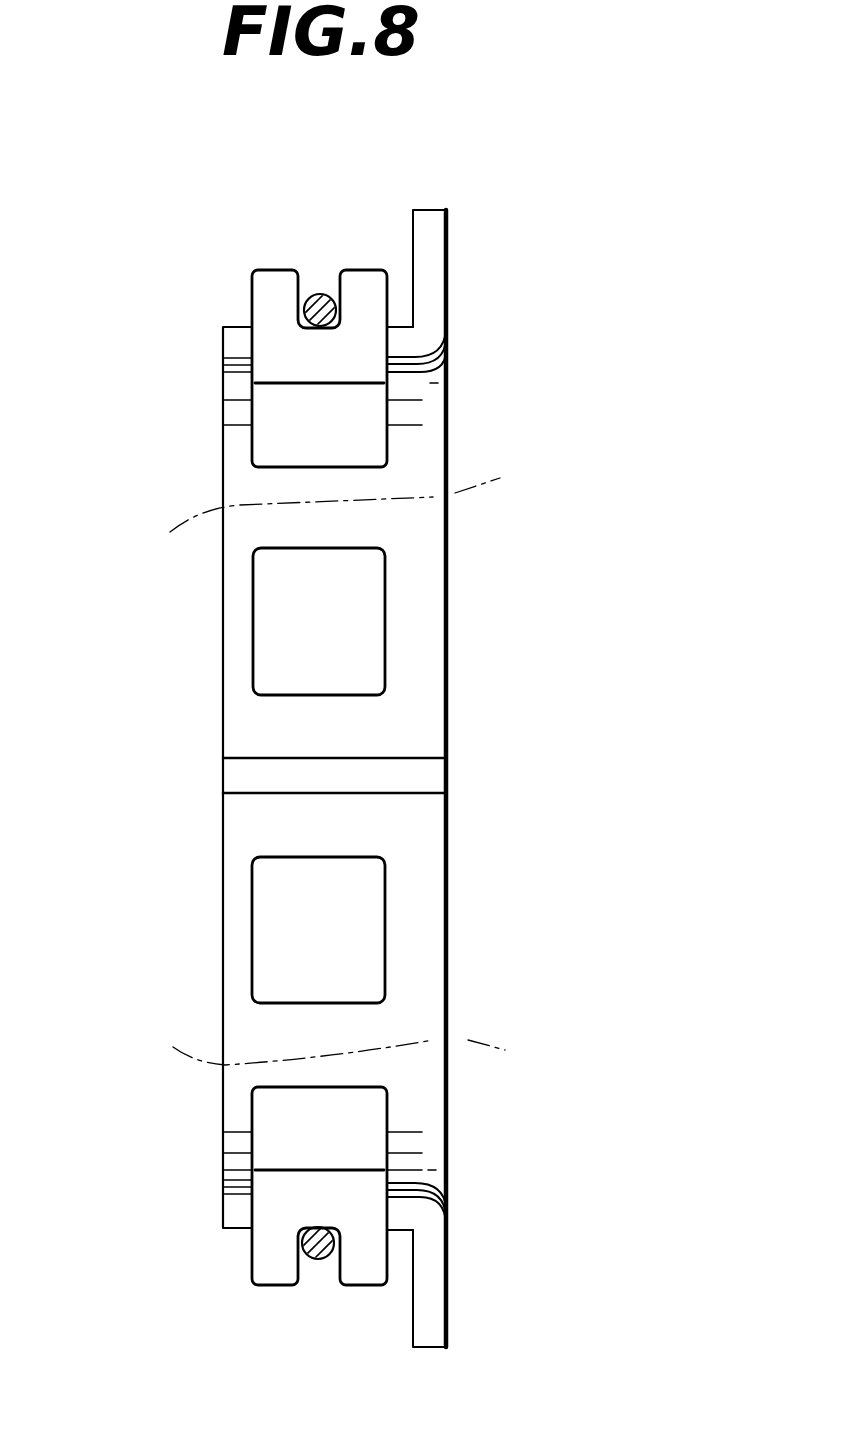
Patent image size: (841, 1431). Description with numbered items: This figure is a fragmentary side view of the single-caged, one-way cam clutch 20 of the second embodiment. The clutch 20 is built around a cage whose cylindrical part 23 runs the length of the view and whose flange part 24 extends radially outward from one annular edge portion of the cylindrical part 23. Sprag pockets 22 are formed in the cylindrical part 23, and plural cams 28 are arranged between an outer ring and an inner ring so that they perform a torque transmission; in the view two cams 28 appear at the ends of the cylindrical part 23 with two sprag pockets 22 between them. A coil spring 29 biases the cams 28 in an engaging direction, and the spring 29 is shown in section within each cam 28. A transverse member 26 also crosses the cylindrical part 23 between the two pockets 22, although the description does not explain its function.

The single-caged, one-way cam clutch 20 is at (497, 1118).
The sprag pocket 22 is at (355, 597).
The cylindrical part 23 is at (255, 1030).
The flange part 24 is at (447, 1270).
The rib 26 is at (430, 775).
The cam 28 is at (360, 288).
The coil spring 29 is at (300, 293).